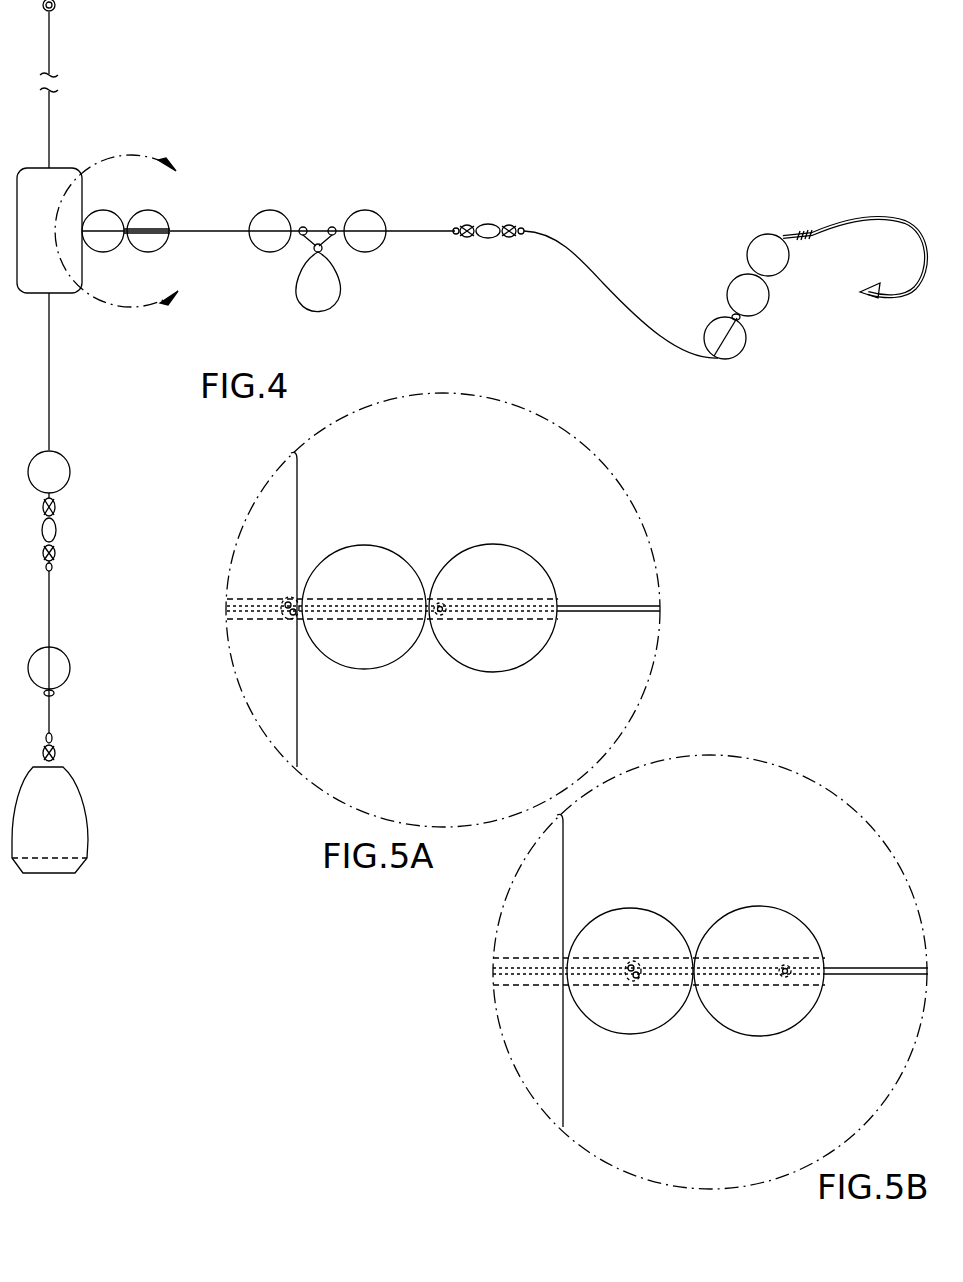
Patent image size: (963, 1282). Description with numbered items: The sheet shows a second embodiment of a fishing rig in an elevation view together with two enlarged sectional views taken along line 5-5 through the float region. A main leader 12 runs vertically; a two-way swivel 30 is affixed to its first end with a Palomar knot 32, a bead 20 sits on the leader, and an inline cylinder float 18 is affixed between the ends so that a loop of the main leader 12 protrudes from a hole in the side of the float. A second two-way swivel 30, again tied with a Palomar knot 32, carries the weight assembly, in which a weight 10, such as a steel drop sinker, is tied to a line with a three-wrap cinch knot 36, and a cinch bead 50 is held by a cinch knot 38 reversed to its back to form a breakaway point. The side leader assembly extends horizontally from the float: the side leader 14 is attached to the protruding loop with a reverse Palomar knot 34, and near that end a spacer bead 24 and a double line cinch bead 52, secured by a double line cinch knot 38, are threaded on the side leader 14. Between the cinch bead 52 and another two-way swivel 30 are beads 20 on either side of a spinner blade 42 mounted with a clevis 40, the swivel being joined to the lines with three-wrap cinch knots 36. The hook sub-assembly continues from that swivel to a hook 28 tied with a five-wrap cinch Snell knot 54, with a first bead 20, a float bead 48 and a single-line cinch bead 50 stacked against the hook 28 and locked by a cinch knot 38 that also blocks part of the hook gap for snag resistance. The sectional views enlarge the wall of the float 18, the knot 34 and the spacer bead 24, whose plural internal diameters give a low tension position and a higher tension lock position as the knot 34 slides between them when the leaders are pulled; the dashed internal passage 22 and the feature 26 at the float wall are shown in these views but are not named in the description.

In FIG. 4, the section line 5 is at (123, 227).
In FIG. 4, the weight 10 is at (63, 790).
In FIG. 4, the main leader 12 is at (52, 118).
In FIG. 4, the side leader 14 is at (192, 229).
In FIG. 5A, the side leader 14 is at (596, 607).
In FIG. 5B, the side leader 14 is at (907, 968).
In FIG. 4, the inline cylinder float 18 is at (60, 297).
In FIG. 5A, the inline cylinder float 18 is at (300, 490).
In FIG. 5B, the inline cylinder float 18 is at (565, 855).
In FIG. 4, the bead 20 is at (276, 216).
In FIG. 5A, the bore channel 22 is at (392, 607).
In FIG. 5B, the bore channel 22 is at (660, 962).
In FIG. 4, the spacer bead 24 is at (103, 212).
In FIG. 5A, the spacer bead 24 is at (368, 556).
In FIG. 5B, the spacer bead 24 is at (637, 916).
In FIG. 5A, the aperture in float 26 is at (312, 640).
In FIG. 5B, the aperture in float 26 is at (592, 988).
In FIG. 4, the hook 28 is at (884, 298).
In FIG. 4, the two-way swivel 30 is at (488, 239).
In FIG. 4, the Palomar knot 32 is at (55, 11).
In FIG. 5A, the reverse Palomar knot 34 is at (287, 622).
In FIG. 5B, the reverse Palomar knot 34 is at (636, 990).
In FIG. 4, the three-wrap cinch knot 36 is at (456, 227).
In FIG. 4, the cinch knot 38 is at (736, 315).
In FIG. 5A, the cinch knot 38 is at (448, 630).
In FIG. 5B, the cinch knot 38 is at (790, 988).
In FIG. 4, the clevis 40 is at (332, 227).
In FIG. 4, the spinner blade 42 is at (312, 296).
In FIG. 4, the float bead 48 is at (762, 303).
In FIG. 4, the cinch bead 50 is at (736, 350).
In FIG. 4, the double line cinch bead 52 is at (165, 241).
In FIG. 5A, the double line cinch bead 52 is at (498, 553).
In FIG. 5B, the double line cinch bead 52 is at (768, 913).
In FIG. 4, the five-wrap cinch Snell knot 54 is at (803, 231).